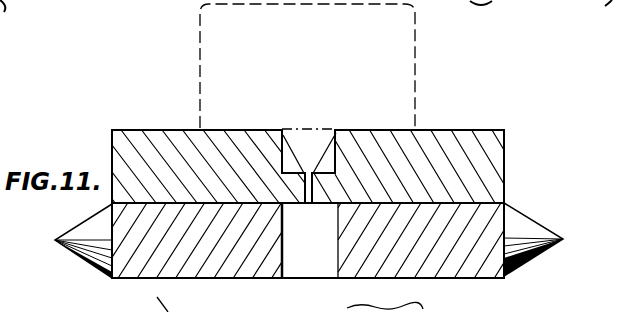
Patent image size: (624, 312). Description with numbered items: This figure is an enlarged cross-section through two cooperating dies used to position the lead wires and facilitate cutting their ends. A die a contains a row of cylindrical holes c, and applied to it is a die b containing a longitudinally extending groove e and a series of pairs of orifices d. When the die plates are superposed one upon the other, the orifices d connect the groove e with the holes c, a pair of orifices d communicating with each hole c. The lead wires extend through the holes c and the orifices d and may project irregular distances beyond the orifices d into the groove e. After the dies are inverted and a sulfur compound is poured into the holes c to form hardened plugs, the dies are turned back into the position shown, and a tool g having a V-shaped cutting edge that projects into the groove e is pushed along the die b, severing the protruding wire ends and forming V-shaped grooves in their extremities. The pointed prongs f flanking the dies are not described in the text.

The die a is at (473, 271).
The die b is at (495, 145).
The cylindrical holes c is at (293, 269).
The orifices d is at (310, 176).
The groove e is at (335, 131).
The pointed prongs f is at (65, 233).
The tool g is at (415, 62).